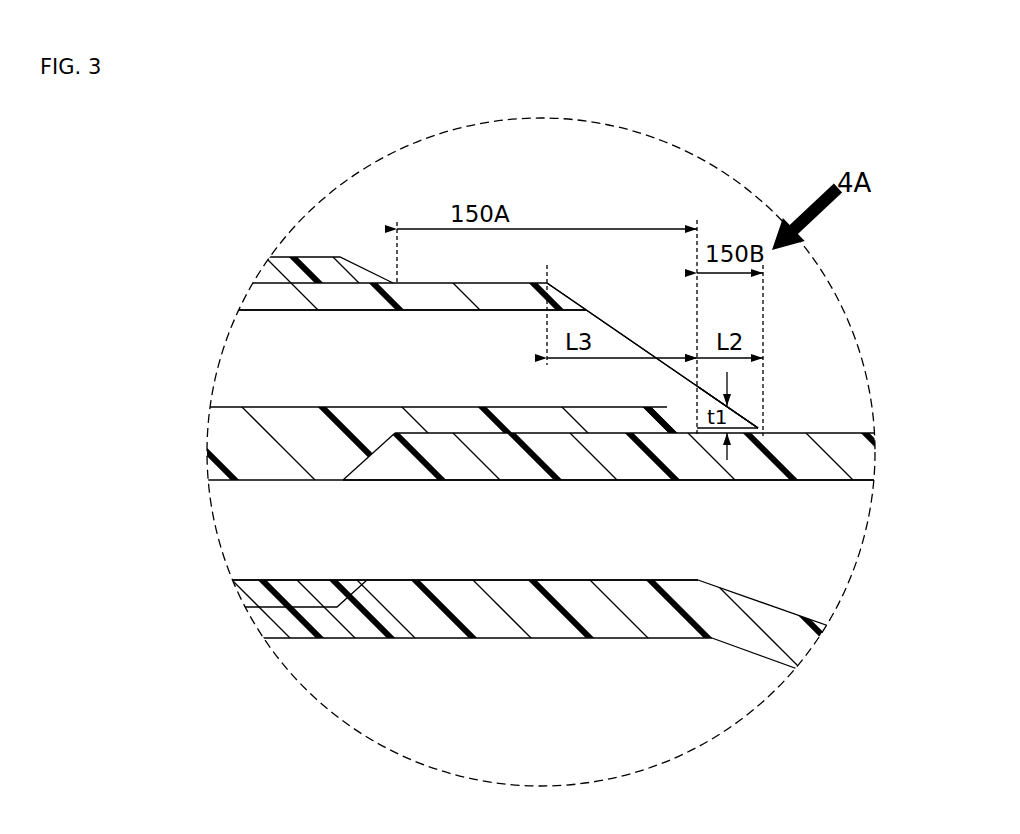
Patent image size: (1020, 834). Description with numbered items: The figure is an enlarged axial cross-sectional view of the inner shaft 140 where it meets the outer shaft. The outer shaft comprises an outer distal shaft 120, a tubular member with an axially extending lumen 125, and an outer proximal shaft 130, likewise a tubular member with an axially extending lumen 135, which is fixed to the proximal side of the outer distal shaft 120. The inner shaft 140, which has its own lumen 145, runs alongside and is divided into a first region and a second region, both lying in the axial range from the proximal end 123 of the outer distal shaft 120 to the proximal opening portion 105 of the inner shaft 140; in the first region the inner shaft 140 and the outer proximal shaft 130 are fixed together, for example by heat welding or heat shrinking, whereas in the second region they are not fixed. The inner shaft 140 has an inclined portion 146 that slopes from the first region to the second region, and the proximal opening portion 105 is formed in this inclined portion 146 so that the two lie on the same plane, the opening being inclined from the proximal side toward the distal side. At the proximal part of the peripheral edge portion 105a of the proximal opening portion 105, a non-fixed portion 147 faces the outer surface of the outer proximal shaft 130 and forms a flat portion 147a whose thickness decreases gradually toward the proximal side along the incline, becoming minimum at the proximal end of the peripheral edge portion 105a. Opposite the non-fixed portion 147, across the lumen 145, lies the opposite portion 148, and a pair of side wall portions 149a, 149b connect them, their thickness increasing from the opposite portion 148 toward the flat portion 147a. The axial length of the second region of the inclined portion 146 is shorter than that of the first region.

The proximal opening portion 105 is at (623, 333).
The peripheral edge portion 105a is at (582, 300).
The outer distal shaft 120 is at (280, 610).
The proximal end 123 is at (360, 270).
The lumen 125 is at (318, 555).
The outer proximal shaft 130 is at (540, 455).
The lumen 135 is at (493, 560).
The inner shaft 140 is at (293, 457).
The lumen 145 is at (282, 382).
The inclined portion 146 is at (610, 312).
The non-fixed portion 147 is at (667, 408).
The flat portion 147a is at (745, 403).
The opposite portion 148 is at (575, 302).
The side wall portion 149a is at (655, 415).
The side wall portion 149b is at (655, 415).